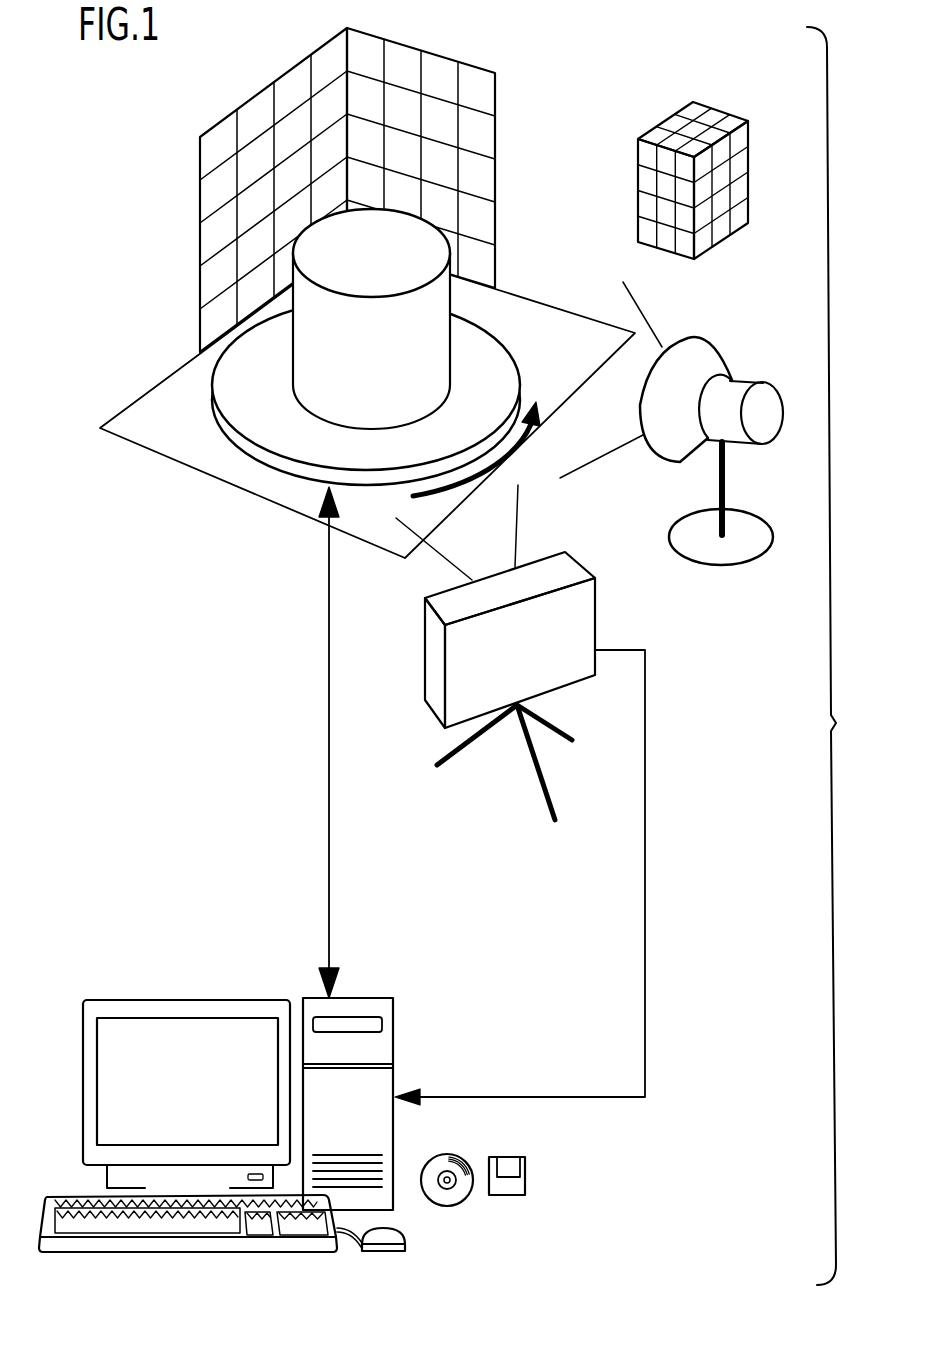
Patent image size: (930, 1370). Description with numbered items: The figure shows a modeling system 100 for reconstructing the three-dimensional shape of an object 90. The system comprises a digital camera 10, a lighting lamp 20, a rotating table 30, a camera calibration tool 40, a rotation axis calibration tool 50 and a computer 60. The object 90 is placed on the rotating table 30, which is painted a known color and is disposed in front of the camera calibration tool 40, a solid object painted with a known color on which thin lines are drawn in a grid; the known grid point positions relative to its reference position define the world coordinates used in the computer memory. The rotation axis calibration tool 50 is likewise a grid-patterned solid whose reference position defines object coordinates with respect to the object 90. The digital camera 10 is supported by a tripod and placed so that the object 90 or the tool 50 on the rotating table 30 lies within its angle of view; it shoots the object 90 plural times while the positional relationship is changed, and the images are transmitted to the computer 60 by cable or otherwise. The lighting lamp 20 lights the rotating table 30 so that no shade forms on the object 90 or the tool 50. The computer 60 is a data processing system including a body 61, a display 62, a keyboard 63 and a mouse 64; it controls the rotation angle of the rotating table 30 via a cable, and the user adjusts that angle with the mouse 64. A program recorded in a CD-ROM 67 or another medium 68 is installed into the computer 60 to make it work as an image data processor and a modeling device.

The digital camera 10 is at (567, 633).
The lighting lamp 20 is at (700, 365).
The rotating table 30 is at (253, 453).
The camera calibration tool 40 is at (482, 68).
The rotation axis calibration tool 50 is at (735, 112).
The computer 60 is at (155, 985).
The body 61 is at (348, 995).
The display 62 is at (217, 997).
The keyboard 63 is at (247, 1243).
The mouse 64 is at (383, 1253).
The CD-ROM 67 is at (453, 1200).
The another medium 68 is at (527, 1180).
The object 90 is at (320, 375).
The modeling system 100 is at (848, 656).